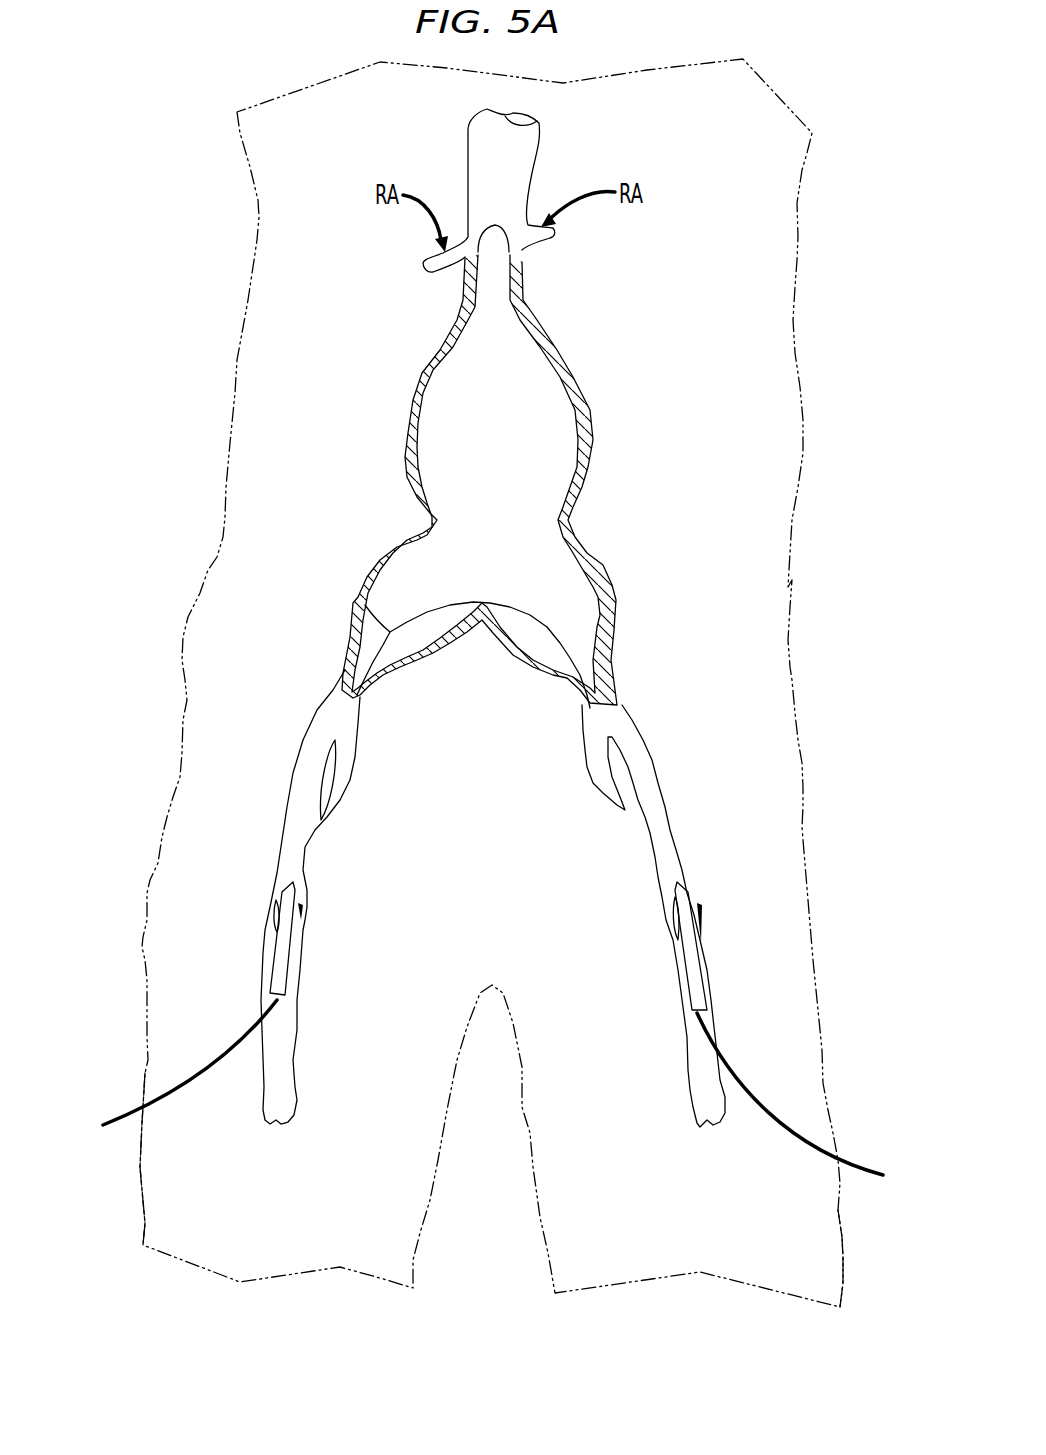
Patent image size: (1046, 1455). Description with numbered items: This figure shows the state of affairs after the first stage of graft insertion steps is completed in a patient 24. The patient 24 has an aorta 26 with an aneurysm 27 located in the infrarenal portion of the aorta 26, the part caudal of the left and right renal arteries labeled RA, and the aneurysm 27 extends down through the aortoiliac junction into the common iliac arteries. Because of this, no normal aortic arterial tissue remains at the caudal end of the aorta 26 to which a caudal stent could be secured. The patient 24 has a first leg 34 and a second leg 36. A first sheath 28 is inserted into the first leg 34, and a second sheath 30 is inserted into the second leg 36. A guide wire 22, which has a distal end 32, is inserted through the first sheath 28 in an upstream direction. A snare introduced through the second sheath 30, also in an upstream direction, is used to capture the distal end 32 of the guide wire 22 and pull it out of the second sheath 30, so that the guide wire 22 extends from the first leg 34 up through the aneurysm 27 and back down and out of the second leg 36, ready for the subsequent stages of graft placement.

The guide wire 22 is at (368, 593).
The patient 24 is at (798, 249).
The aorta 26 is at (542, 152).
The aneurysm 27 is at (593, 455).
The first sheath 28 is at (295, 970).
The second sheath 30 is at (683, 963).
The distal end 32 is at (870, 1168).
The first leg 34 is at (141, 1210).
The second leg 36 is at (843, 1247).